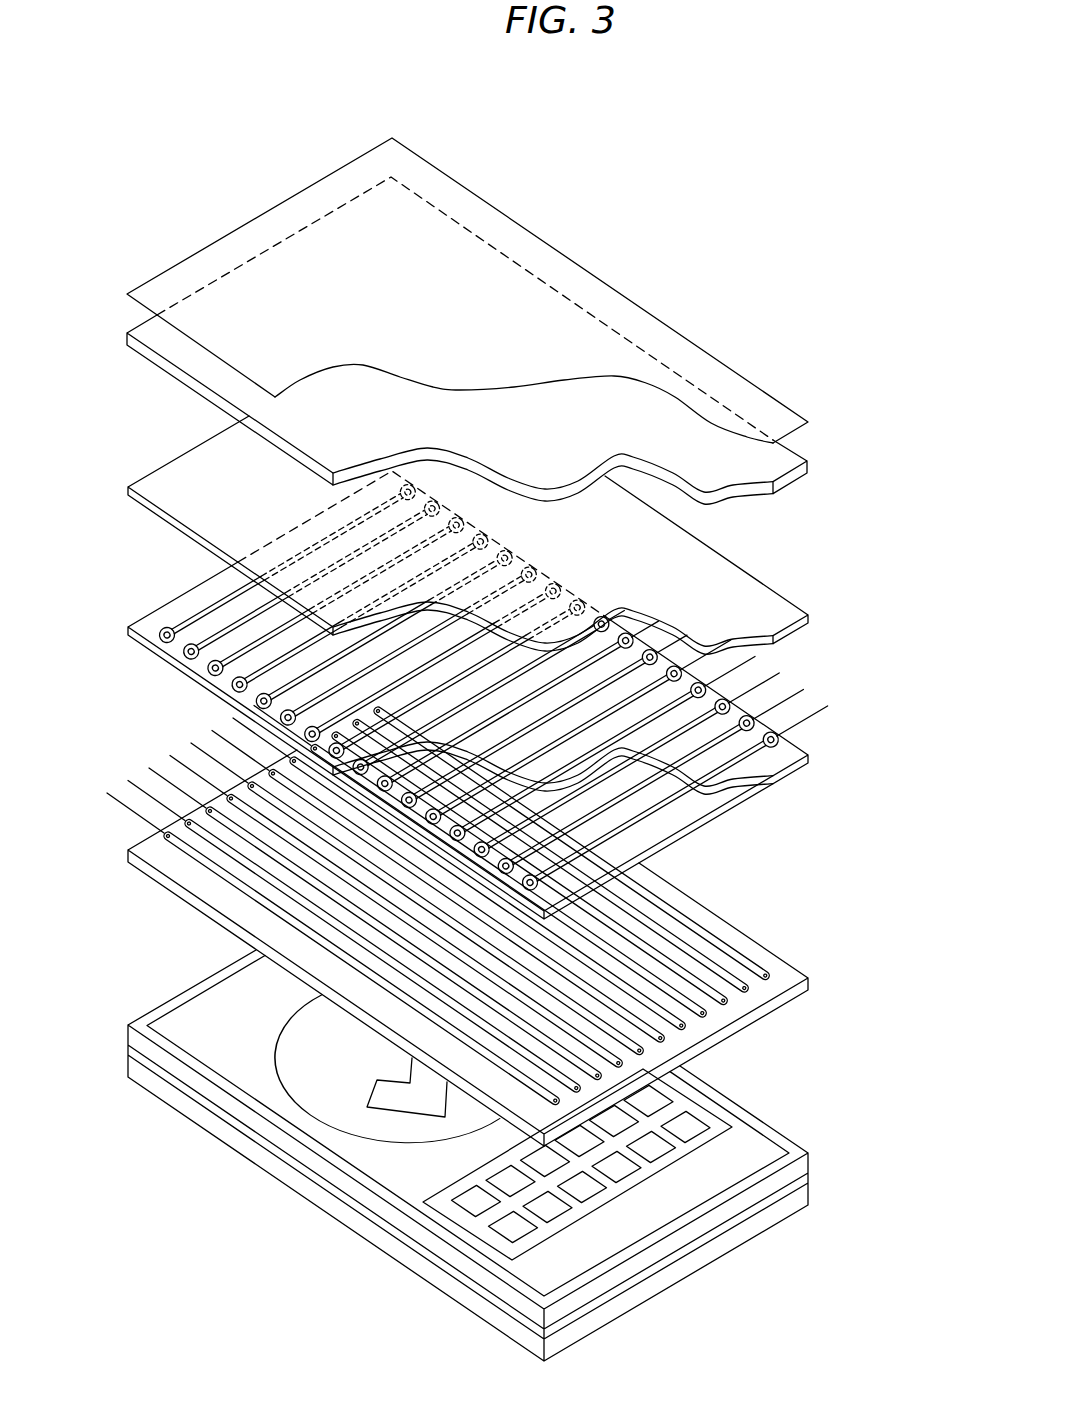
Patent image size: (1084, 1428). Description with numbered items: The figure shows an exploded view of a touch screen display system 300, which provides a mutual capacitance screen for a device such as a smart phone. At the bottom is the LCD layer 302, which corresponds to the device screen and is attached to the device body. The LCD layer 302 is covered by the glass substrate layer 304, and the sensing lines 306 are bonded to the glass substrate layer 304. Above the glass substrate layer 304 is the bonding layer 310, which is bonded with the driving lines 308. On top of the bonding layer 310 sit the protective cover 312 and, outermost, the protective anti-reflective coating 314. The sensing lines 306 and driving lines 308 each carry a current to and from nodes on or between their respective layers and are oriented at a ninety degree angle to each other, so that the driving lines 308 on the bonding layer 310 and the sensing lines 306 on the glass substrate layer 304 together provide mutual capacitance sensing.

The touch screen display system 300 is at (714, 217).
The LCD layer 302 is at (810, 1163).
The glass substrate layer 304 is at (722, 1033).
The sensing lines 306 is at (742, 962).
The driving lines 308 is at (732, 762).
The bonding layer 310 is at (757, 607).
The protective cover 312 is at (792, 475).
The protective anti-reflective coating 314 is at (173, 282).